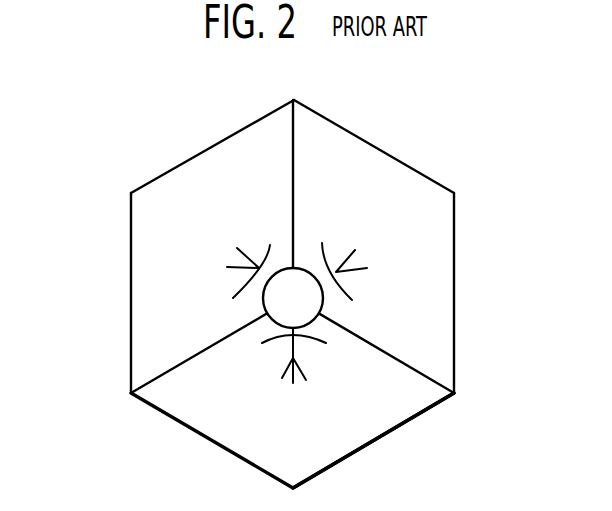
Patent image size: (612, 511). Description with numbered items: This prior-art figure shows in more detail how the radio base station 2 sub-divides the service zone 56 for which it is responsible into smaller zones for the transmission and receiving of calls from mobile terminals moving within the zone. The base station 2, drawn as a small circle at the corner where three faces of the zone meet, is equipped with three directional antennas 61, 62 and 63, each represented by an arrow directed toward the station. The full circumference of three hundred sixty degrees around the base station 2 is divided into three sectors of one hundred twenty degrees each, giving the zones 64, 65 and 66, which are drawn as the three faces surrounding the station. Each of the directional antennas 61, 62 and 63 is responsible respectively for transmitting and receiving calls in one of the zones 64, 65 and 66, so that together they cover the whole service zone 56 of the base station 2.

The radio base station 2 is at (312, 298).
The service zone 56 is at (400, 161).
The directional antenna 61 is at (348, 298).
The directional antenna 62 is at (263, 343).
The directional antenna 63 is at (268, 244).
The zone 64 is at (438, 232).
The zone 65 is at (390, 410).
The zone 66 is at (150, 273).